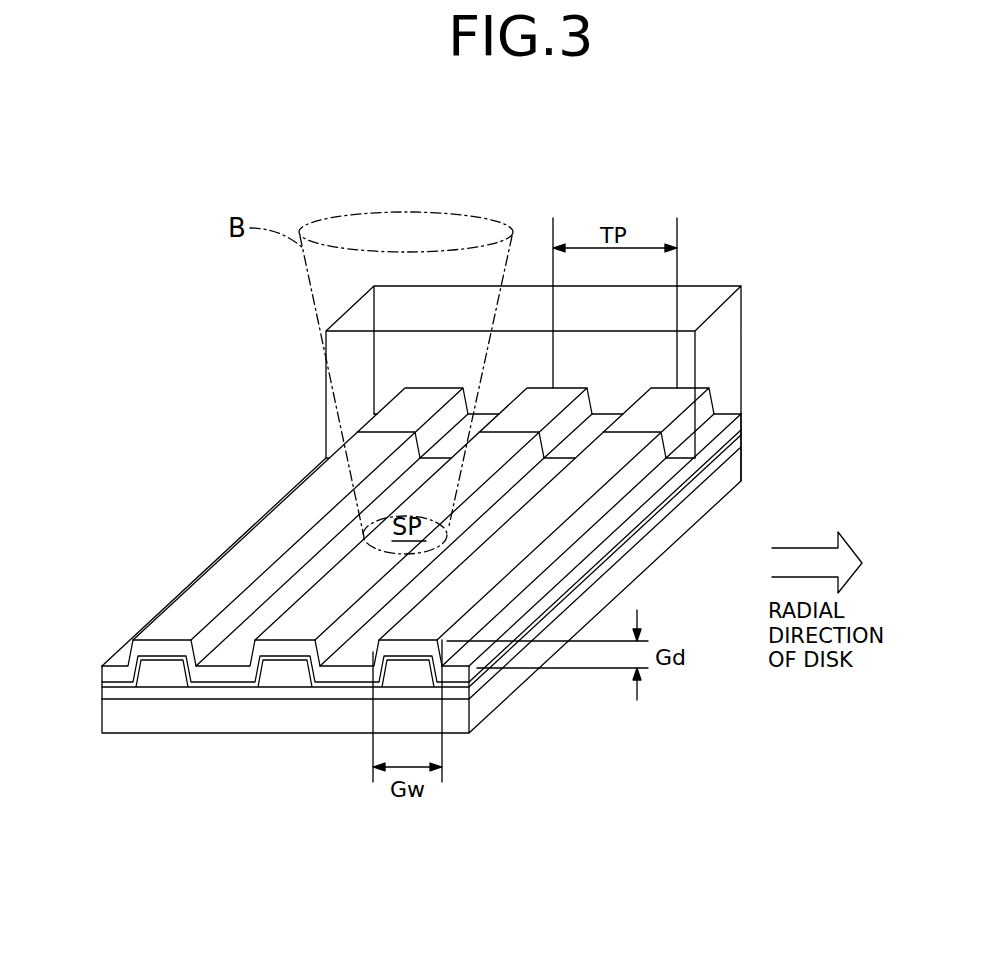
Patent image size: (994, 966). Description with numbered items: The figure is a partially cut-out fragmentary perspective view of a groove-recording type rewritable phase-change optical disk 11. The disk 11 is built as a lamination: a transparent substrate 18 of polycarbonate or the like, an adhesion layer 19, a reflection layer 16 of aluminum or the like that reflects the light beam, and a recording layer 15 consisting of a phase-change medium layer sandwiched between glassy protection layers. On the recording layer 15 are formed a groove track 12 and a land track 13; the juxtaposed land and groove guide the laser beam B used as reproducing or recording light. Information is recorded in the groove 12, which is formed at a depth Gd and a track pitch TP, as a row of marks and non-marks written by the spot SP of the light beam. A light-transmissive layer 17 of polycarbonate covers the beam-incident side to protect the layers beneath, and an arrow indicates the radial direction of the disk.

The optical disk 11 is at (461, 523).
The groove track 12 is at (167, 632).
The land track 13 is at (113, 658).
The recording layer 15 is at (736, 424).
The reflection layer 16 is at (742, 432).
The light-transmissive layer 17 is at (718, 355).
The transparent substrate 18 is at (727, 478).
The adhesion layer 19 is at (737, 446).